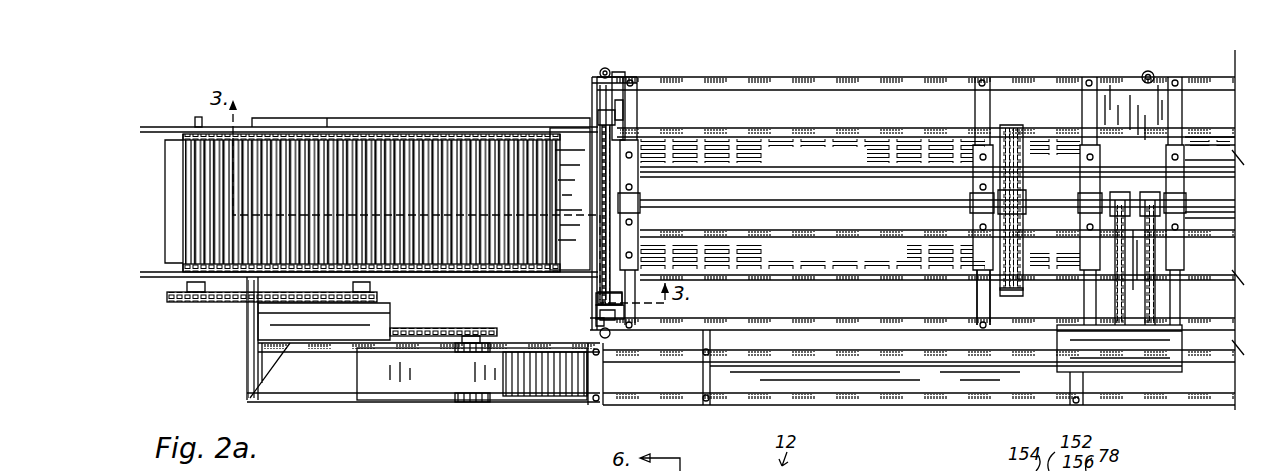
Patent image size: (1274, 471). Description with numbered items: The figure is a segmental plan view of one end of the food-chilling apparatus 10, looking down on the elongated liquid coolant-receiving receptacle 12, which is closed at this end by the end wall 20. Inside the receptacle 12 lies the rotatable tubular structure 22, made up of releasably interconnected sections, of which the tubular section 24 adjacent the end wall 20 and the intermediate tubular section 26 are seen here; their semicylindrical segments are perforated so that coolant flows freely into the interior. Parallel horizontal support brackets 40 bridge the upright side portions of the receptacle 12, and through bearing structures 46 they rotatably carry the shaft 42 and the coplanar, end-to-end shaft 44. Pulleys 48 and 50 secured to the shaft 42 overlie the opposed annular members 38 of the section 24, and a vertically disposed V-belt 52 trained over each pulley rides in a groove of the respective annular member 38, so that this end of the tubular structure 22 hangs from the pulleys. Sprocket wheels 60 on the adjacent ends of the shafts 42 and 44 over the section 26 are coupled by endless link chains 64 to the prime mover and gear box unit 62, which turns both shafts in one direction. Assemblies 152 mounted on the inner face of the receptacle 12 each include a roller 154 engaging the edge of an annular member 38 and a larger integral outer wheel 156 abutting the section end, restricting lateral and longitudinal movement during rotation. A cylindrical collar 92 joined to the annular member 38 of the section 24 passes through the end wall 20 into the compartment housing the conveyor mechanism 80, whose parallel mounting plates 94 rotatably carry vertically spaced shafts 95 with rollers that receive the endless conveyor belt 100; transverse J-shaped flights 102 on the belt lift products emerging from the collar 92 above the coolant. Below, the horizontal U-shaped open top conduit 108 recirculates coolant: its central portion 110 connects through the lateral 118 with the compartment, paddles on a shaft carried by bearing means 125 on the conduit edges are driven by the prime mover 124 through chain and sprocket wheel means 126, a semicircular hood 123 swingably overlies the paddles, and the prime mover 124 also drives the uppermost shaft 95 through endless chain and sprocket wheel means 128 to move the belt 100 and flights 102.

The apparatus 10 is at (244, 347).
The liquid coolant-receiving receptacle 12 is at (792, 72).
The end wall 20 is at (595, 305).
The tubular structure 22 is at (1015, 119).
The tubular section 24 is at (732, 124).
The tubular section 26 is at (1199, 133).
The annular member 38 is at (1000, 290).
The support bracket 40 is at (637, 102).
The shaft 42 is at (760, 208).
The shaft 44 is at (1200, 212).
The bearing structure 46 is at (638, 190).
The pulley 48 is at (602, 190).
The pulley 50 is at (1016, 196).
The V-belt 52 is at (598, 290).
The sprocket wheel 60 is at (1150, 192).
The prime mover and gear box unit 62 is at (1119, 348).
The endless link chain 64 is at (1115, 278).
The conveyor mechanism 80 is at (426, 123).
The cylindrical collar 92 is at (560, 140).
The mounting plate 94 is at (165, 102).
The shaft 95 is at (198, 117).
The endless conveyor belt 100 is at (307, 164).
The J-shaped flight 102 is at (165, 187).
The open top conduit 108 is at (611, 412).
The central portion 110 is at (868, 407).
The lateral 118 is at (248, 318).
The semicircular hood 123 is at (418, 380).
The prime mover 124 is at (264, 343).
The bearing means 125 is at (490, 347).
The chain and sprocket wheel means 126 is at (457, 325).
The endless chain and sprocket wheel means 128 is at (213, 311).
The assembly 152 is at (602, 110).
The roller 154 is at (626, 80).
The outer wheel 156 is at (608, 70).